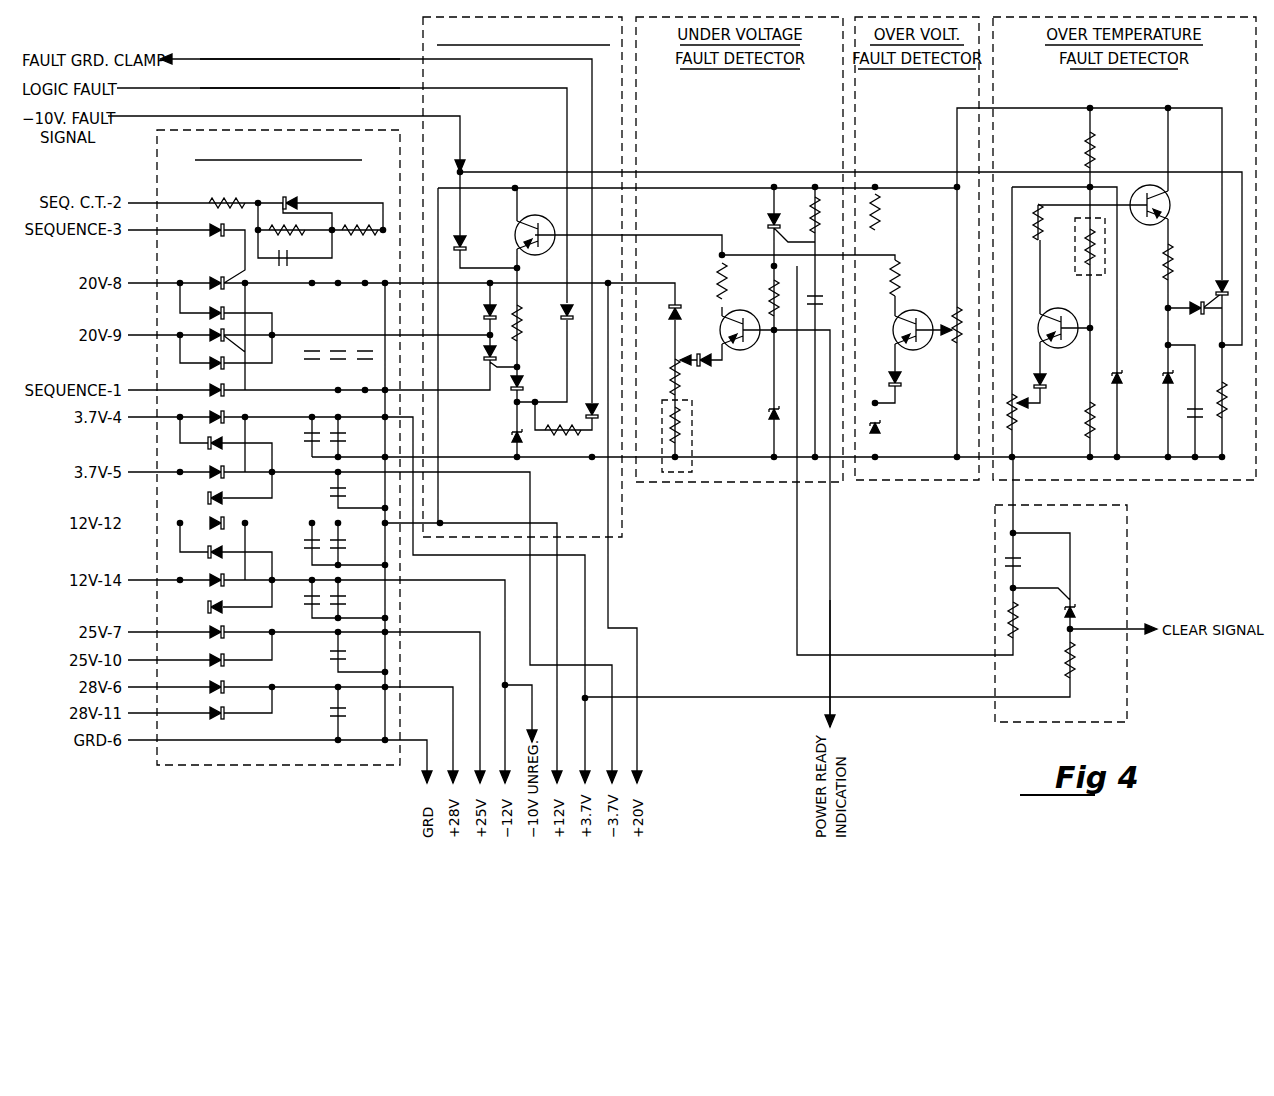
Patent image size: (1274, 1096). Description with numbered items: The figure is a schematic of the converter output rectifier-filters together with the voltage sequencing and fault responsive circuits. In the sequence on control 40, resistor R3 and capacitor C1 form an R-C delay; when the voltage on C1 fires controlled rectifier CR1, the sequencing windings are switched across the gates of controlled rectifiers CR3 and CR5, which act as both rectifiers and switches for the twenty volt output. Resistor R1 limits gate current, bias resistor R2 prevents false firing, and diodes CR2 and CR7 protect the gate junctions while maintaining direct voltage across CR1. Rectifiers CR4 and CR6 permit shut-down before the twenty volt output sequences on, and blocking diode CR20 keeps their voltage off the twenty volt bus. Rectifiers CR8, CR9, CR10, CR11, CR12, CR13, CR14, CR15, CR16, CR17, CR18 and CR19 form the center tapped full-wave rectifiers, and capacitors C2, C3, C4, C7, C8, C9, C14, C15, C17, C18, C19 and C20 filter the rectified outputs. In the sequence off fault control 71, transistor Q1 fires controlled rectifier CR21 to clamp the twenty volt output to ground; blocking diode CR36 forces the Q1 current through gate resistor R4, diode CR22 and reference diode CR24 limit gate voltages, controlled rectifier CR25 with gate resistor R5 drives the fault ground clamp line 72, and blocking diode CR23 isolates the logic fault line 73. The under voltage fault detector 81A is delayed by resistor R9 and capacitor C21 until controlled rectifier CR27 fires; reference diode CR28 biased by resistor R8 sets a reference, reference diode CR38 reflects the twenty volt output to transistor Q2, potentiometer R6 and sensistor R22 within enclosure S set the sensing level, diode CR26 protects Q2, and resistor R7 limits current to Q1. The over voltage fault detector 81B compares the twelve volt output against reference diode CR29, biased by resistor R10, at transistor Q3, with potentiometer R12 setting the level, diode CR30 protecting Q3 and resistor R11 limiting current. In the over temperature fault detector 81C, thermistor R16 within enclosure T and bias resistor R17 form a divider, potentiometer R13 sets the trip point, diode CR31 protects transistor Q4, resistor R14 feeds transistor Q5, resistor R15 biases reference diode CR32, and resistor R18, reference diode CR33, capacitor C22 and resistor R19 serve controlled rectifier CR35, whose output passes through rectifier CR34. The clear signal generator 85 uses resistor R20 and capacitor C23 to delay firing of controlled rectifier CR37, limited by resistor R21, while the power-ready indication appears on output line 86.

The sequence on control 40 is at (280, 767).
The sequence off fault control 71 is at (622, 537).
The fault ground clamp line 72 is at (318, 58).
The logic fault line 73 is at (345, 86).
The under voltage fault detector 81A is at (718, 484).
The over voltage fault detector 81B is at (912, 482).
The over temperature fault detector 81C is at (1200, 482).
The clear signal generator 85 is at (995, 590).
The output line 86 is at (834, 600).
The resistor R1 is at (212, 200).
The bias resistor R2 is at (292, 233).
The resistor R3 is at (357, 235).
The resistor R4 is at (521, 312).
The resistor R5 is at (555, 433).
The potentiometer R6 is at (671, 359).
The resistor R7 is at (718, 284).
The resistor R8 is at (770, 300).
The resistor R9 is at (812, 215).
The bias resistor R10 is at (879, 214).
The resistor R11 is at (898, 271).
The potentiometer R12 is at (953, 310).
The potentiometer R13 is at (1018, 420).
The resistor R14 is at (1042, 238).
The bias resistor R15 is at (1095, 150).
The thermistor R16 is at (1093, 262).
The bias resistor R17 is at (1085, 415).
The resistor R18 is at (1164, 262).
The resistor R19 is at (1226, 412).
The resistor R20 is at (1018, 620).
The resistor R21 is at (1075, 660).
The sensistor R22 is at (672, 395).
The capacitor C1 is at (280, 262).
The capacitor C2 is at (308, 362).
The capacitor C3 is at (341, 362).
The capacitor C4 is at (368, 362).
The capacitor C7 is at (308, 443).
The capacitor C8 is at (345, 437).
The capacitor C9 is at (330, 492).
The capacitor C14 is at (307, 544).
The capacitor C15 is at (345, 544).
The capacitor C17 is at (307, 600).
The capacitor C18 is at (345, 600).
The capacitor C19 is at (330, 655).
The capacitor C20 is at (330, 712).
The capacitor C21 is at (820, 303).
The capacitor C22 is at (1190, 413).
The capacitor C23 is at (1022, 562).
The controlled rectifier CR1 is at (298, 200).
The diode CR2 is at (208, 228).
The controlled rectifier CR3 is at (208, 281).
The rectifier CR4 is at (225, 312).
The controlled rectifier CR5 is at (208, 333).
The rectifier CR6 is at (208, 366).
The diode CR7 is at (224, 393).
The rectifier CR8 is at (208, 415).
The rectifier CR9 is at (225, 442).
The rectifier CR10 is at (208, 470).
The rectifier CR11 is at (210, 501).
The rectifier CR12 is at (224, 521).
The rectifier CR13 is at (210, 555).
The rectifier CR14 is at (224, 583).
The rectifier CR15 is at (210, 610).
The rectifier CR16 is at (210, 635).
The rectifier CR17 is at (210, 663).
The rectifier CR18 is at (210, 690).
The rectifier CR19 is at (210, 716).
The blocking diode CR20 is at (487, 308).
The controlled rectifier CR21 is at (487, 358).
The diode CR22 is at (522, 380).
The blocking diode CR23 is at (566, 322).
The reference diode CR24 is at (510, 437).
The controlled rectifier CR25 is at (586, 405).
The diode CR26 is at (709, 364).
The controlled rectifier CR27 is at (769, 223).
The reference diode CR28 is at (769, 414).
The reference diode CR29 is at (880, 428).
The diode CR30 is at (901, 383).
The diode CR31 is at (1051, 368).
The reference diode CR32 is at (1121, 383).
The reference diode CR33 is at (1165, 373).
The diode CR34 is at (1188, 305).
The controlled rectifier CR35 is at (1220, 282).
The blocking diode CR36 is at (464, 242).
The controlled rectifier CR37 is at (1075, 614).
The reference diode CR38 is at (672, 306).
The transistor Q1 is at (537, 225).
The transistor Q2 is at (746, 342).
The transistor Q3 is at (921, 340).
The transistor Q4 is at (1058, 313).
The transistor Q5 is at (1171, 207).
The switch / sense element S is at (664, 412).
The temperature sensing element T is at (1084, 246).